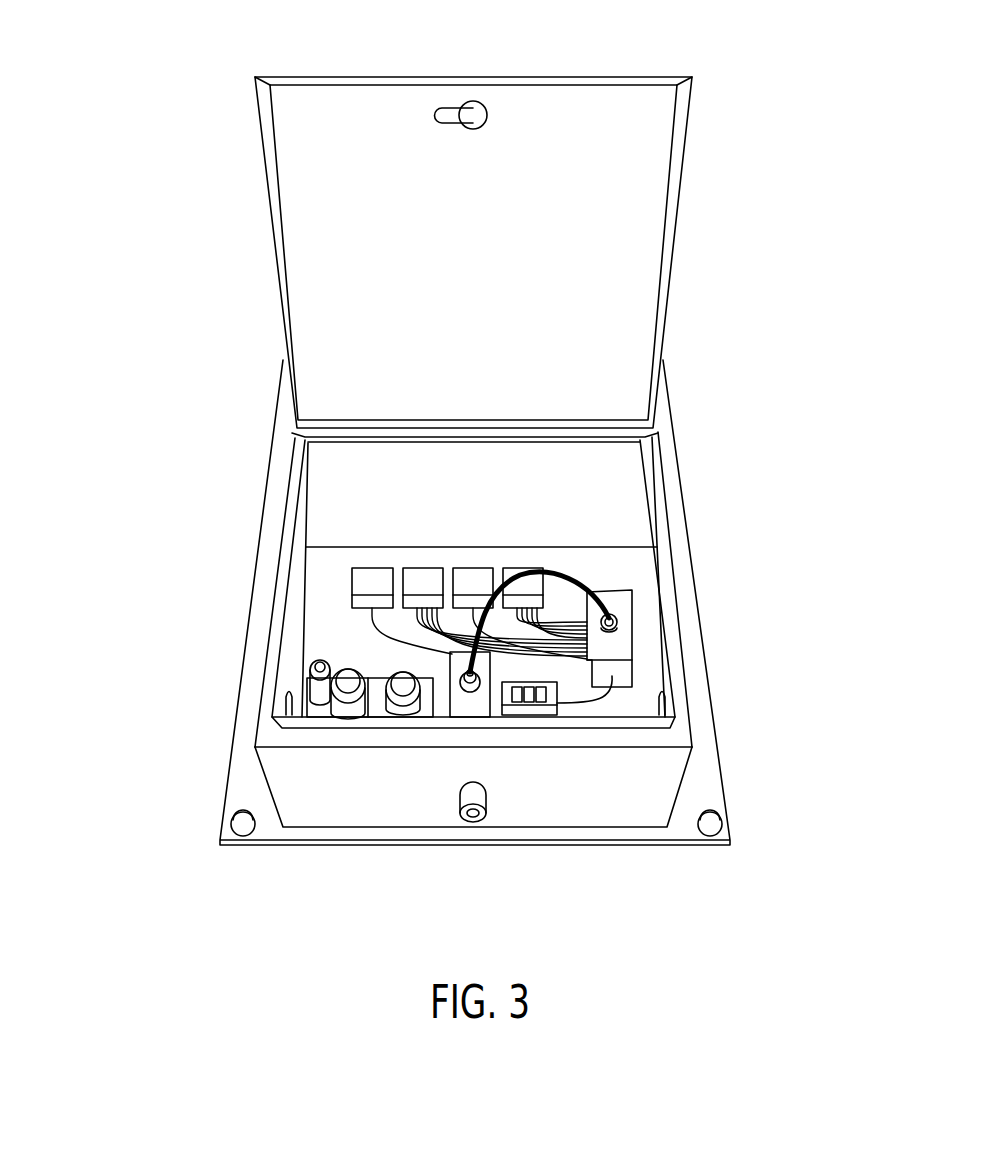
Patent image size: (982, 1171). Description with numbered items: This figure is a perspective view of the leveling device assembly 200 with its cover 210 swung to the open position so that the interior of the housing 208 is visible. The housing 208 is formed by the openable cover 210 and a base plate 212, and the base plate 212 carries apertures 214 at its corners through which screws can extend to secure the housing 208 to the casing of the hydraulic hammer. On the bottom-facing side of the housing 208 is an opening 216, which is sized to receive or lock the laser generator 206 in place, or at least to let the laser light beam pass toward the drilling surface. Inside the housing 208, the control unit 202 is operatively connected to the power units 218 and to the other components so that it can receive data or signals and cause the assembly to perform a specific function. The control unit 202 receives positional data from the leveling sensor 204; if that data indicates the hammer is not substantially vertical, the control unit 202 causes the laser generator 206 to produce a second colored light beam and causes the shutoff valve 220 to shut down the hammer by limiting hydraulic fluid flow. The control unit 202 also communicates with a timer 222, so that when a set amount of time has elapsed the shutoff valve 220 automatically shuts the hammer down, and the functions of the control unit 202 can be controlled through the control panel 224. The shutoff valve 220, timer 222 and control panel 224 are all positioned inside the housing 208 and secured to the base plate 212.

The leveling device assembly 200 is at (157, 420).
The control unit 202 is at (618, 594).
The leveling sensor 204 is at (474, 585).
The laser generator 206 is at (461, 700).
The housing 208 is at (235, 705).
The cover 210 is at (598, 198).
The base plate 212 is at (700, 767).
The apertures 214 is at (243, 836).
The opening 216 is at (473, 822).
The power units 218 is at (426, 585).
The shutoff valve 220 is at (378, 677).
The timer 222 is at (371, 585).
The control panel 224 is at (533, 710).